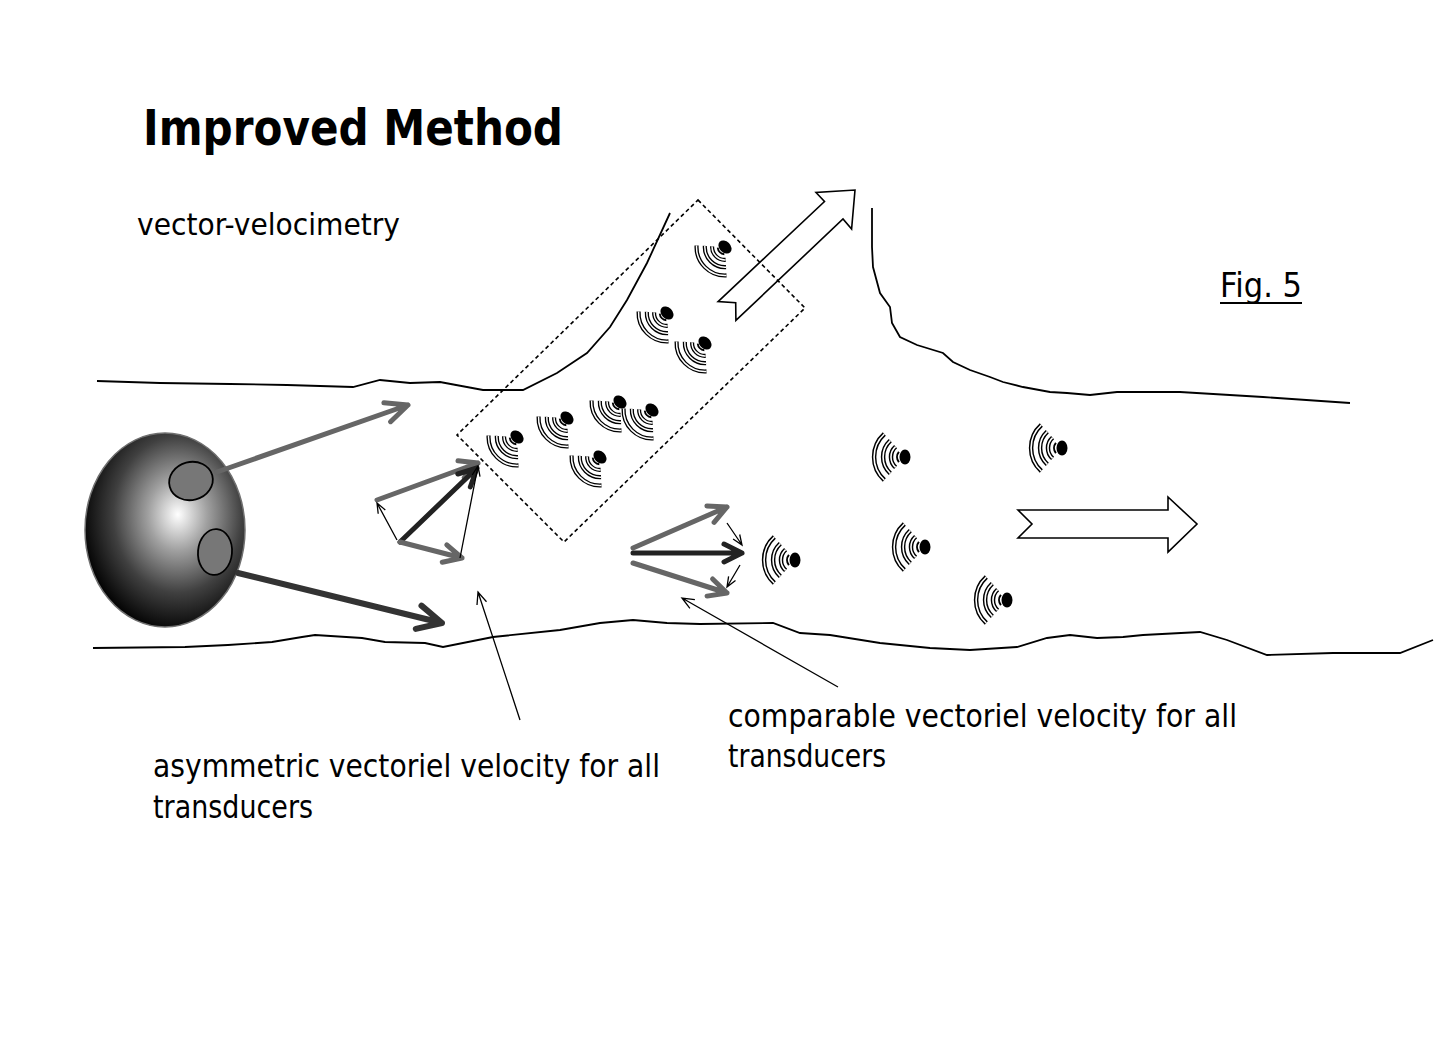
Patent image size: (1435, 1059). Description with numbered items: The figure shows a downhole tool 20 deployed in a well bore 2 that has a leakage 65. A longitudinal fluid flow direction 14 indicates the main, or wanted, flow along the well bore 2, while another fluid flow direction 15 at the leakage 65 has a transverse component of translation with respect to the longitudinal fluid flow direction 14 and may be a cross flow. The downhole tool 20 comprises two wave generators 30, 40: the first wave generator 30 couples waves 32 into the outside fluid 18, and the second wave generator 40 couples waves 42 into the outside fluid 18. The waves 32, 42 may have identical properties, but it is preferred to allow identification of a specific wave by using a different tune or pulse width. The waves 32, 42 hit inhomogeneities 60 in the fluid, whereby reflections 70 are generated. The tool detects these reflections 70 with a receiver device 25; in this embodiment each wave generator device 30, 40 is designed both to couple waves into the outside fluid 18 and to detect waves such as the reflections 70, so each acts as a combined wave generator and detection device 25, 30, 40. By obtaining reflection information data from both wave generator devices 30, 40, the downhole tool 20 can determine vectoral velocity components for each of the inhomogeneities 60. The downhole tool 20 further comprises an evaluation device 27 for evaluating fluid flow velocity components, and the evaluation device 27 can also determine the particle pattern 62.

The well bore 2 is at (320, 638).
The longitudinal fluid flow direction 14 is at (1145, 510).
The other fluid flow direction 15 is at (780, 240).
The outside fluid 18 is at (1155, 617).
The downhole tool 20 is at (125, 440).
The receiver device 25 is at (205, 480).
The evaluation device 27 is at (143, 588).
The first wave generator 30 is at (180, 470).
The waves 32 is at (376, 405).
The second wave generator 40 is at (205, 580).
The waves 42 is at (393, 615).
The inhomogeneities 60 is at (567, 415).
The particle pattern 62 is at (768, 342).
The leakage 65 is at (872, 247).
The reflections 70 is at (535, 422).